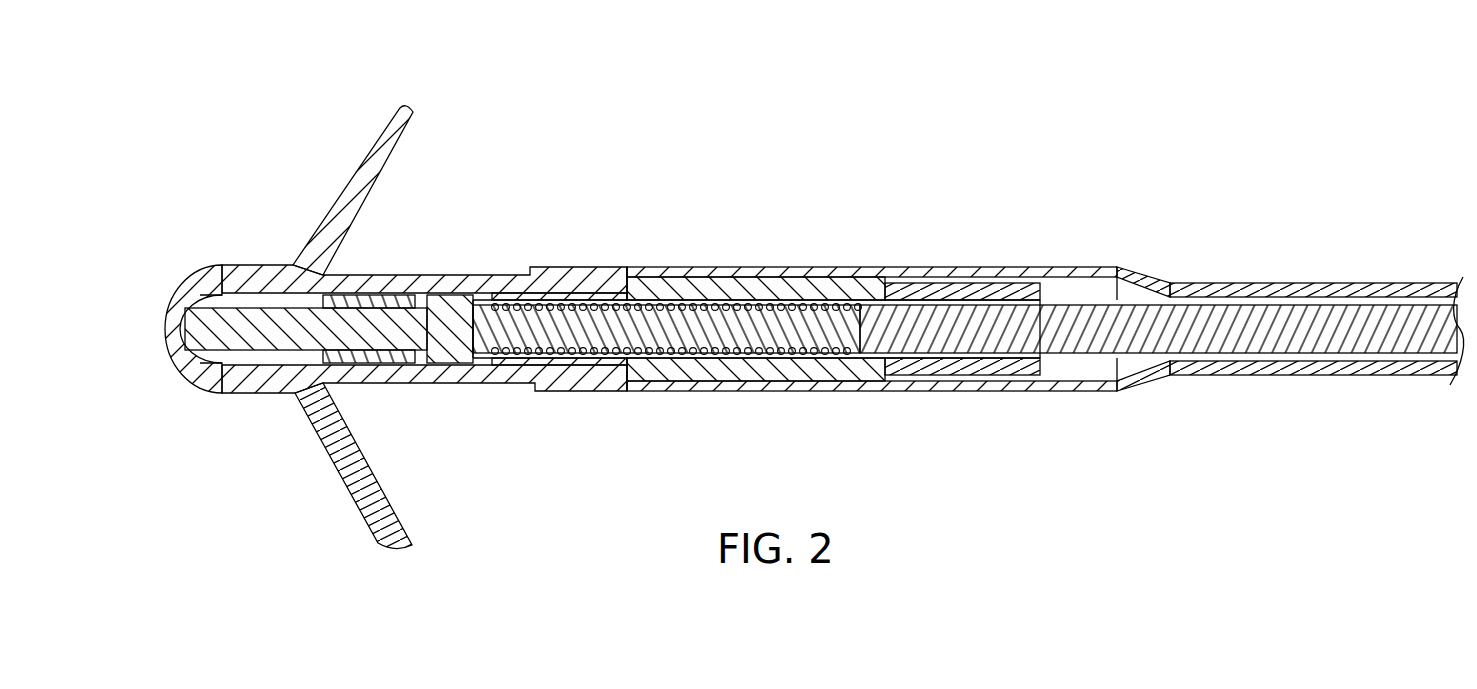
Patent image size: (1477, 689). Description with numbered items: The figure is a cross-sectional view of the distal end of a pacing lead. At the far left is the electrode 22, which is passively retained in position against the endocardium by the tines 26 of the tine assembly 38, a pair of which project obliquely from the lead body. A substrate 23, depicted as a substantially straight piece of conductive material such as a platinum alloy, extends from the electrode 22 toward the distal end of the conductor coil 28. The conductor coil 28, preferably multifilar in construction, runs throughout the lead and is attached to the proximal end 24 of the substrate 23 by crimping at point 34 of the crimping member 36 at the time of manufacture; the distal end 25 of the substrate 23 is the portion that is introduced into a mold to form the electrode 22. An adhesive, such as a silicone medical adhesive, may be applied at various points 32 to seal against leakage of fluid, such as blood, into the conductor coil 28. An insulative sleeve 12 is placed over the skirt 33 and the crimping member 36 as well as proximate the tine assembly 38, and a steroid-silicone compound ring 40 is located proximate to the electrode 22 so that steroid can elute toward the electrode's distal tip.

The insulative sleeve 12 is at (1290, 270).
The electrode 22 is at (166, 300).
The substrate 23 is at (250, 340).
The proximal end 24 is at (437, 360).
The distal end 25 is at (205, 300).
The tines 26 is at (373, 552).
The conductor coil 28 is at (1358, 373).
The points 32 is at (497, 276).
The skirt 33 is at (668, 378).
The point 34 is at (527, 384).
The crimping member 36 is at (650, 303).
The tine assembly 38 is at (442, 95).
The steroid-silicone compound ring 40 is at (383, 270).